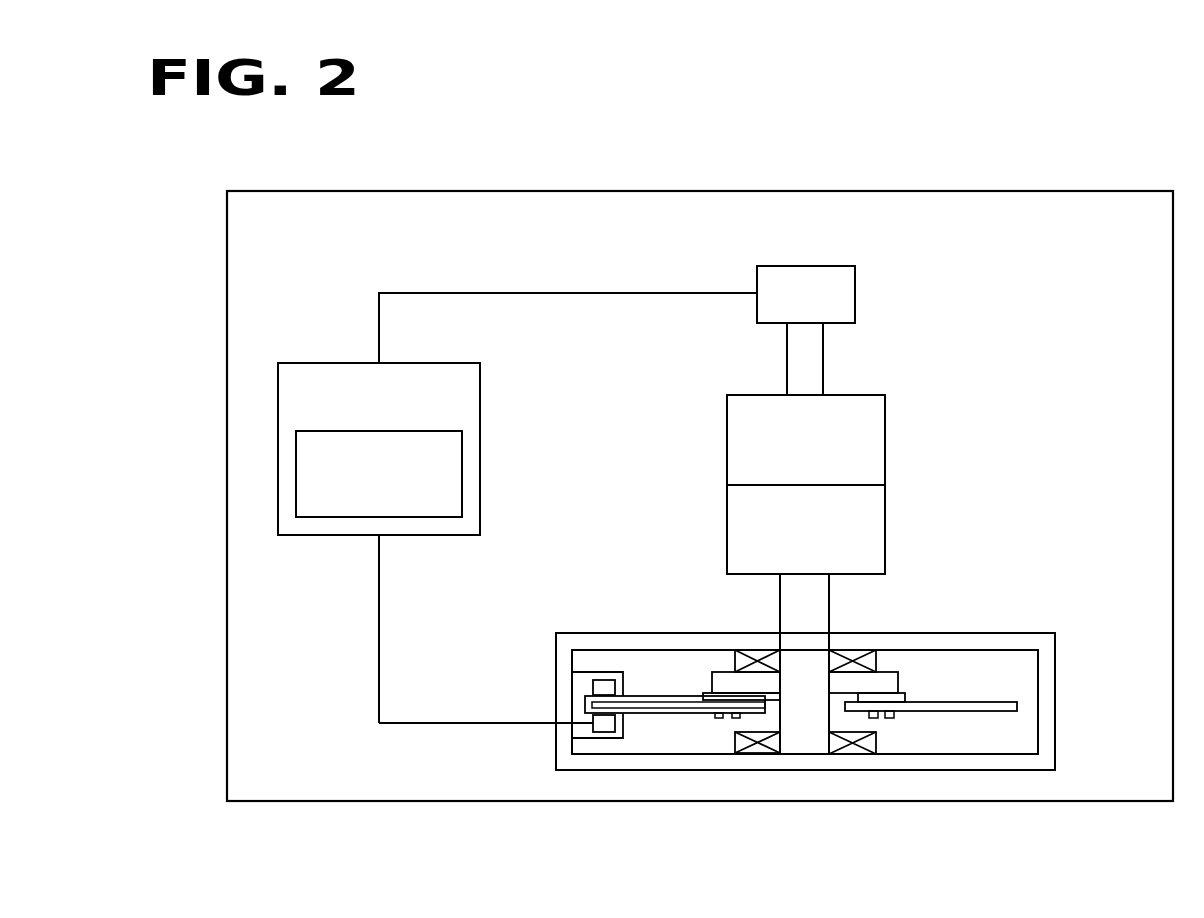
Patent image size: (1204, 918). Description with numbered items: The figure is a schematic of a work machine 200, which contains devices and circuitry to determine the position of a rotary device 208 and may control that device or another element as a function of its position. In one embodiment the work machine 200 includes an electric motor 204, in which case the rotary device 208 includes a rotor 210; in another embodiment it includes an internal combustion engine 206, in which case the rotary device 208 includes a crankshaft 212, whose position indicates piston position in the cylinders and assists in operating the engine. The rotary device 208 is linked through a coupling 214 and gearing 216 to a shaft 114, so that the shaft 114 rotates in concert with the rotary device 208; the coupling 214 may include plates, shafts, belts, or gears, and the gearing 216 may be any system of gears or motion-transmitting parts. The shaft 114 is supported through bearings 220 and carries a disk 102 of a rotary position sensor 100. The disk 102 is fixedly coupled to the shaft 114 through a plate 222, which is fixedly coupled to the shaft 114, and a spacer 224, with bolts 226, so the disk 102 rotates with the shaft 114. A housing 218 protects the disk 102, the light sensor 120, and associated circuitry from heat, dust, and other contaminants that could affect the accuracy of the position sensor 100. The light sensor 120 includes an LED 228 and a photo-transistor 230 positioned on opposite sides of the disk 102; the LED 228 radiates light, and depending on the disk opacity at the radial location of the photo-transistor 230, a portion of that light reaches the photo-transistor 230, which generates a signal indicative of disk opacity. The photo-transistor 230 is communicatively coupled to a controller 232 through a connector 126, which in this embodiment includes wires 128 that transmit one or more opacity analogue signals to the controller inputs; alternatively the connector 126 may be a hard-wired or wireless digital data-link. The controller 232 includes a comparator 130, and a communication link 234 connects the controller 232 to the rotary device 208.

The work machine 200 is at (1044, 132).
The electric motor 204 is at (678, 191).
The internal combustion engine 206 is at (801, 191).
The rotary device 208 is at (887, 272).
The crankshaft 212 is at (825, 340).
The rotor 210 is at (825, 379).
The coupling 214 is at (885, 437).
The gearing 216 is at (885, 542).
The shaft 114 is at (829, 608).
The housing 218 is at (988, 633).
The rotary position sensor 100 is at (1075, 646).
The bearings 220 is at (853, 755).
The plate 222 is at (722, 672).
The spacer 224 is at (903, 693).
The disk 102 is at (977, 702).
The bolts 226 is at (895, 718).
The LED 228 is at (604, 680).
The photo-transistor 230 is at (610, 725).
The light sensor 120 is at (587, 738).
The controller 232 is at (480, 378).
The comparator 130 is at (462, 467).
The communication link 234 is at (578, 292).
The wires 128 is at (378, 668).
The connector 126 is at (369, 731).